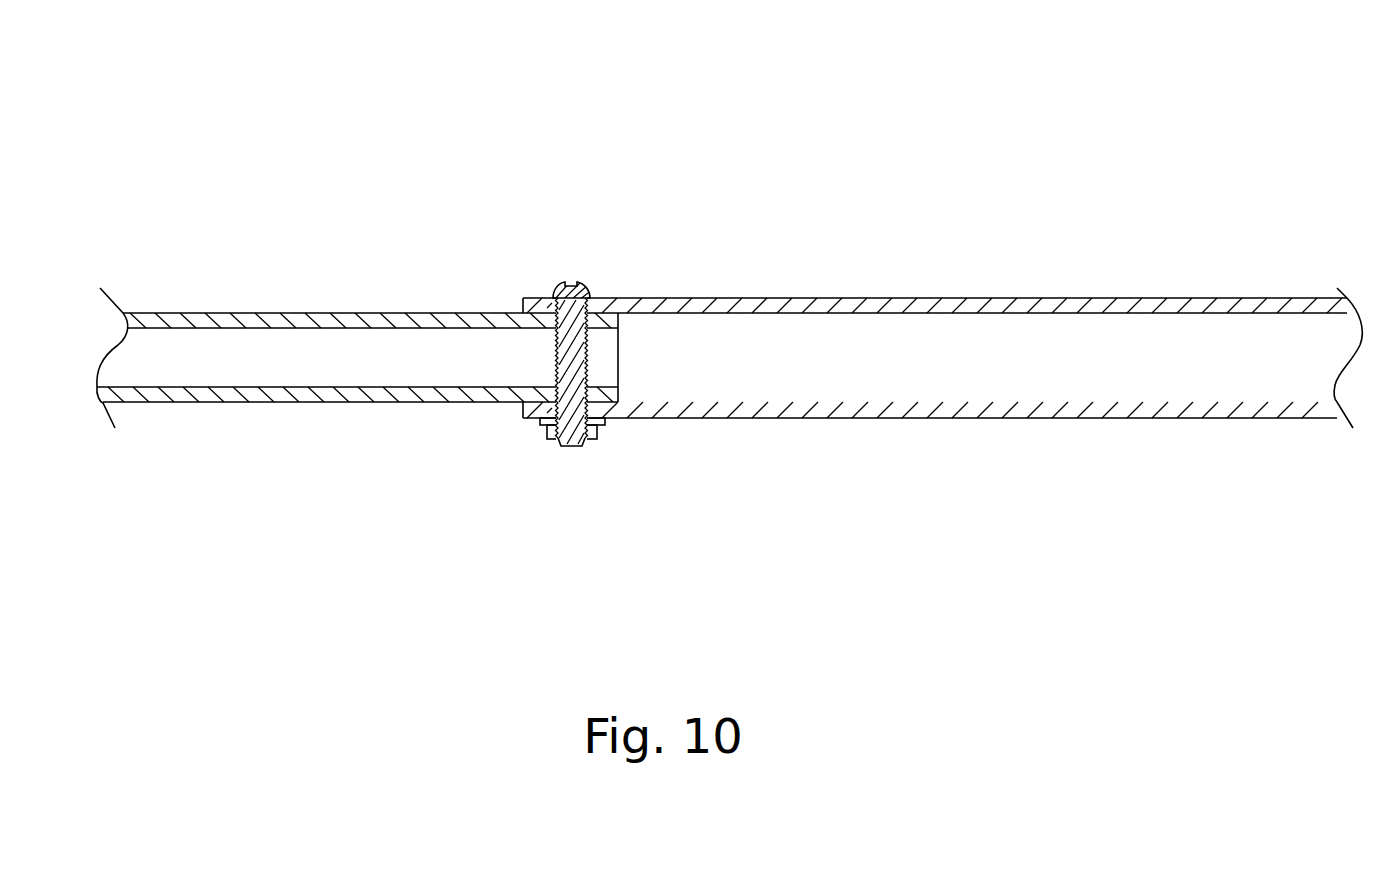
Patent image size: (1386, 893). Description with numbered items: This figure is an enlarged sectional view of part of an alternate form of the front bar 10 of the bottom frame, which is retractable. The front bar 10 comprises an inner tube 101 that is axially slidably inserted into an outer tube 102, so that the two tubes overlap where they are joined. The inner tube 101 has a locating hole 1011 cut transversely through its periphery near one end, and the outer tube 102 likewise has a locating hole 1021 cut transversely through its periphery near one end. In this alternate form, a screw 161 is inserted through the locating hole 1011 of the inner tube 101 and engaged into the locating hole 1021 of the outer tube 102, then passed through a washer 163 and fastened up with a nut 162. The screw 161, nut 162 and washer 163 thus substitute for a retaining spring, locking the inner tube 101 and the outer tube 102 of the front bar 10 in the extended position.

The front bar 10 is at (625, 70).
The inner tube 101 is at (432, 313).
The outer tube 102 is at (737, 298).
The locating hole 1011 is at (545, 315).
The locating hole 1021 is at (587, 307).
The screw 161 is at (583, 287).
The nut 162 is at (587, 447).
The washer 163 is at (542, 427).